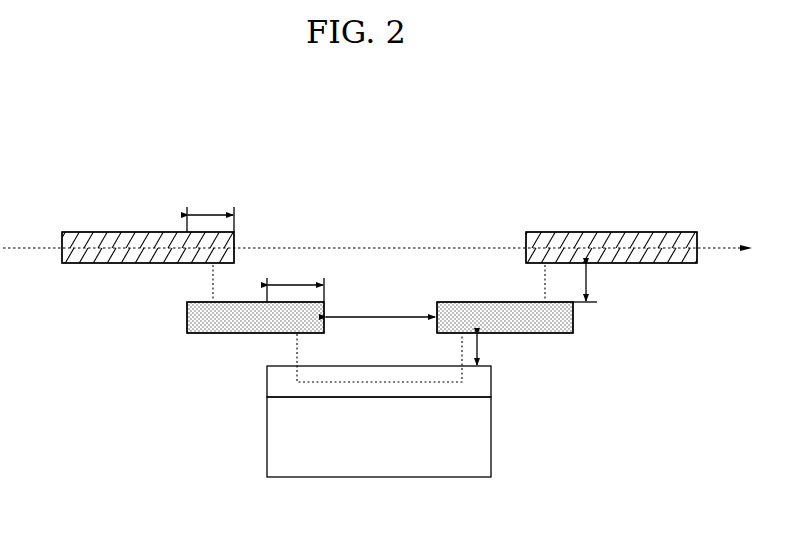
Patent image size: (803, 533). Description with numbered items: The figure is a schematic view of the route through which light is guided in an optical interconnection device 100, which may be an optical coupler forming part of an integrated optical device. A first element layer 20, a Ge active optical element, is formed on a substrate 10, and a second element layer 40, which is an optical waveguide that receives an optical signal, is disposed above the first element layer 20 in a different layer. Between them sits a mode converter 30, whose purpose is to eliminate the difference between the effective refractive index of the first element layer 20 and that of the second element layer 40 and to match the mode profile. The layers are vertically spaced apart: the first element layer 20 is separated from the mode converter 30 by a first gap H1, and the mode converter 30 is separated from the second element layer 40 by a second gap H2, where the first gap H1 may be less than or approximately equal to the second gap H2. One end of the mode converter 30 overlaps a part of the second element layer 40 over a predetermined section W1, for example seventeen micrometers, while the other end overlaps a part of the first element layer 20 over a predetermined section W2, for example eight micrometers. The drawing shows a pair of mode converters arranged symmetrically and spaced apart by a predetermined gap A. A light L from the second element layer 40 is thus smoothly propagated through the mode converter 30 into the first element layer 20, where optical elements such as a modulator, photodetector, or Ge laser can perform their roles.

The semiconductor device 100 is at (127, 127).
The substrate 10 is at (482, 447).
The first element layer 20 is at (482, 383).
The mode converter 30 is at (566, 322).
The second element layer 40 is at (617, 243).
The light L is at (33, 246).
The predetermined gap A is at (380, 306).
The predetermined section W1 is at (210, 210).
The predetermined section W2 is at (255, 296).
The first gap H1 is at (492, 350).
The second gap H2 is at (595, 283).